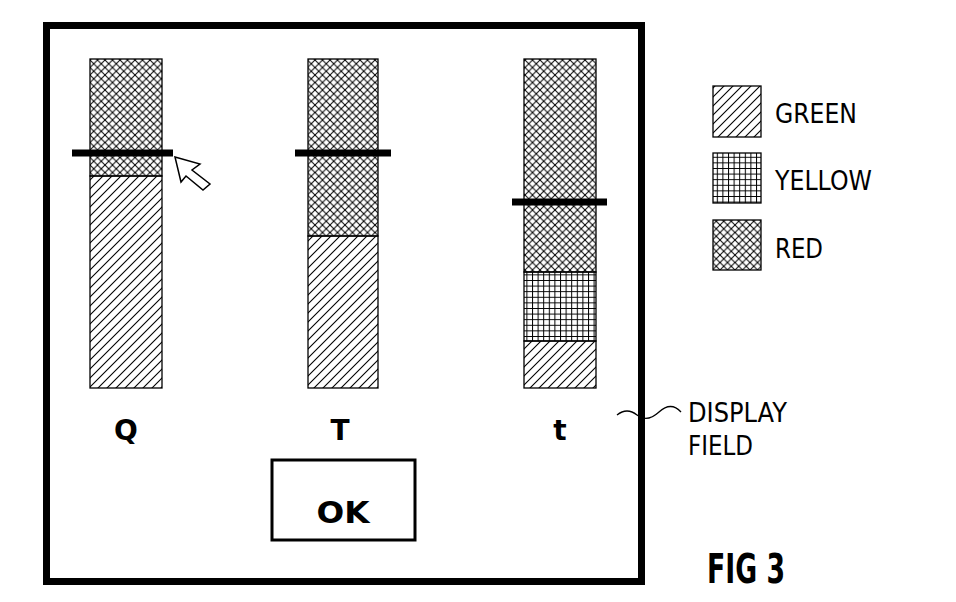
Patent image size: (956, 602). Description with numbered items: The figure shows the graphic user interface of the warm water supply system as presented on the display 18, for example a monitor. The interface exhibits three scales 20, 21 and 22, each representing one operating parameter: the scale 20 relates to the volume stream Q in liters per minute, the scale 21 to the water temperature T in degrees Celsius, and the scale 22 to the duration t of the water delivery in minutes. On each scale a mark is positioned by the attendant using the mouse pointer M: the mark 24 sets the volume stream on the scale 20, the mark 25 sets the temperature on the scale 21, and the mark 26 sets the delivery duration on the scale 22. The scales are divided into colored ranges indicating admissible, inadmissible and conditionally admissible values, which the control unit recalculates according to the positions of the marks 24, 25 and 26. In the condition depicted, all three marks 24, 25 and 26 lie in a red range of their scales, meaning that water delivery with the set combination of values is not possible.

The display 18 is at (645, 493).
The scale 20 is at (163, 290).
The scale 21 is at (306, 353).
The scale 22 is at (523, 367).
The mark 24 is at (175, 151).
The mark 25 is at (300, 151).
The mark 26 is at (518, 200).
The mouse pointer M is at (206, 189).